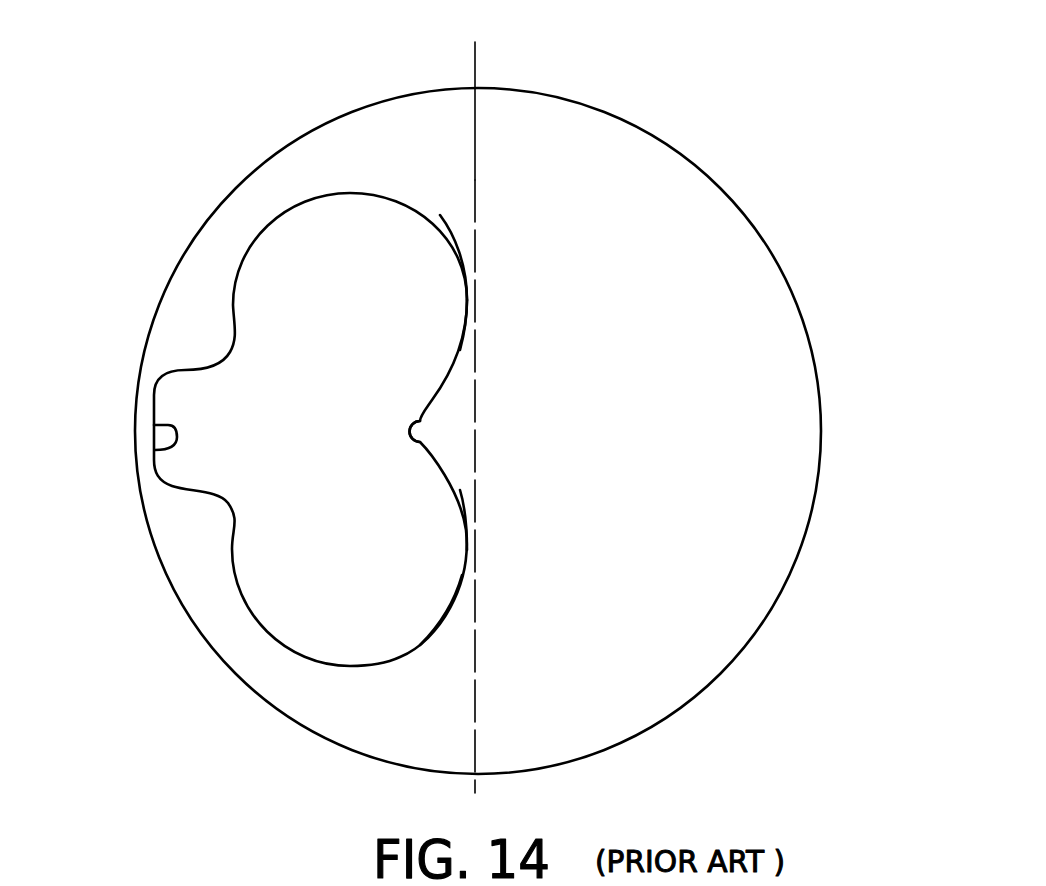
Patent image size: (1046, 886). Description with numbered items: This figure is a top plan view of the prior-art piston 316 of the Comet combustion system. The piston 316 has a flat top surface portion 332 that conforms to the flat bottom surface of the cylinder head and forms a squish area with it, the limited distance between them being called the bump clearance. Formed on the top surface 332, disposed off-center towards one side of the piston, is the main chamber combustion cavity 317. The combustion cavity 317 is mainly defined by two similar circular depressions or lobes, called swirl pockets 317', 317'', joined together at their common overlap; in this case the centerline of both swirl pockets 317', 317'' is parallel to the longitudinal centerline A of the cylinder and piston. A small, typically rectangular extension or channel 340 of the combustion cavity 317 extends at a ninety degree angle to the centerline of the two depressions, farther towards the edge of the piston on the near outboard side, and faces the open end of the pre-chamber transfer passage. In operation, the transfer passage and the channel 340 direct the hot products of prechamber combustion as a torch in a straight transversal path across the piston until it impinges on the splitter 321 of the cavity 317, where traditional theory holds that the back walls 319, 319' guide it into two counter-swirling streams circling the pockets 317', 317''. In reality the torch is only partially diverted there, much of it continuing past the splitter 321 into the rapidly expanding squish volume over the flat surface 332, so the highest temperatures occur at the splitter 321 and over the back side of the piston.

The longitudinal centerline A is at (475, 78).
The piston 316 is at (800, 311).
The main chamber combustion cavity 317 is at (310, 396).
The swirl pocket 317' is at (510, 246).
The swirl pocket 317'' is at (525, 520).
The back wall 319 is at (528, 325).
The back wall 319' is at (499, 610).
The splitter 321 is at (420, 438).
The flat top surface portion 332 is at (676, 251).
The channel 340 is at (167, 448).